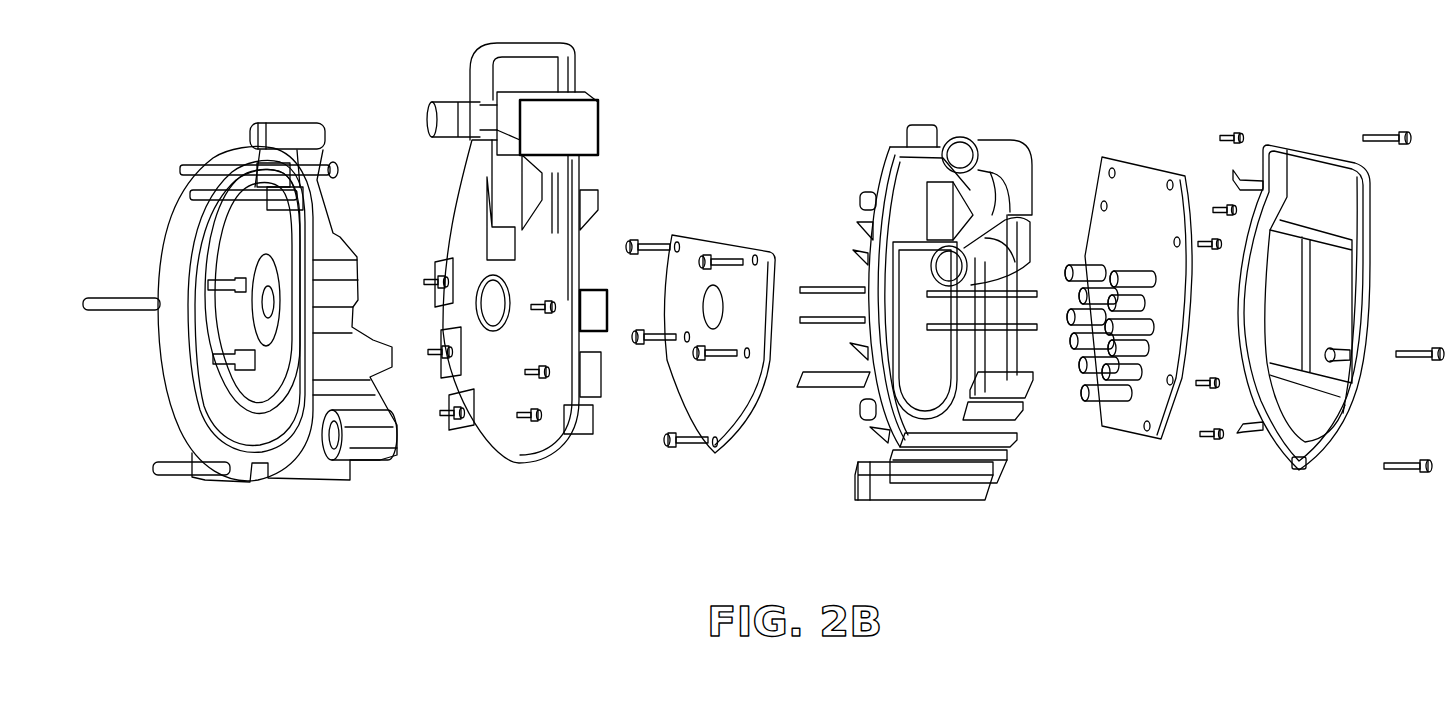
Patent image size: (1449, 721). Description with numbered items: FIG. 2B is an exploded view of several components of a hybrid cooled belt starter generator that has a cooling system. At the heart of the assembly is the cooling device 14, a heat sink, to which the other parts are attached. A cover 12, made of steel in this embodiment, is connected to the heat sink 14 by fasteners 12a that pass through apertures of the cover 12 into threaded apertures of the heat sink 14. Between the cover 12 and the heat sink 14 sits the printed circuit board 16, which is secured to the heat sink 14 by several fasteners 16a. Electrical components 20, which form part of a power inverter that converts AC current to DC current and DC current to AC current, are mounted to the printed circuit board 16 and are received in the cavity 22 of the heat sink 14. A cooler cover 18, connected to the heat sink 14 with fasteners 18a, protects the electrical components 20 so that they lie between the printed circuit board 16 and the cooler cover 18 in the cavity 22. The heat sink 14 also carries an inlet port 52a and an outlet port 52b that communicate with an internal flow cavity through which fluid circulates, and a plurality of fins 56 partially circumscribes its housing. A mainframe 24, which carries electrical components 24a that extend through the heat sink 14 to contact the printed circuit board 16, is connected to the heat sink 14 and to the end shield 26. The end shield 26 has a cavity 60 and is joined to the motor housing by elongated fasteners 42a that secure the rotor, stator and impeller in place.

The cover 12 is at (1343, 298).
The fasteners 12a is at (1380, 133).
The cooling device 14 is at (959, 337).
The printed circuit board 16 is at (1158, 296).
The fasteners 16a is at (1234, 134).
The cooler cover 18 is at (681, 344).
The fasteners 18a is at (645, 240).
The electrical components 20 is at (1112, 438).
The cavity 22 is at (912, 357).
The mainframe 24 is at (539, 280).
The electrical components 24a is at (557, 437).
The end shield 26 is at (330, 126).
The elongated fasteners 42a is at (106, 298).
The inlet port 52a is at (1003, 153).
The outlet port 52b is at (1033, 226).
The fins 56 is at (975, 489).
The cavity 60 is at (240, 308).